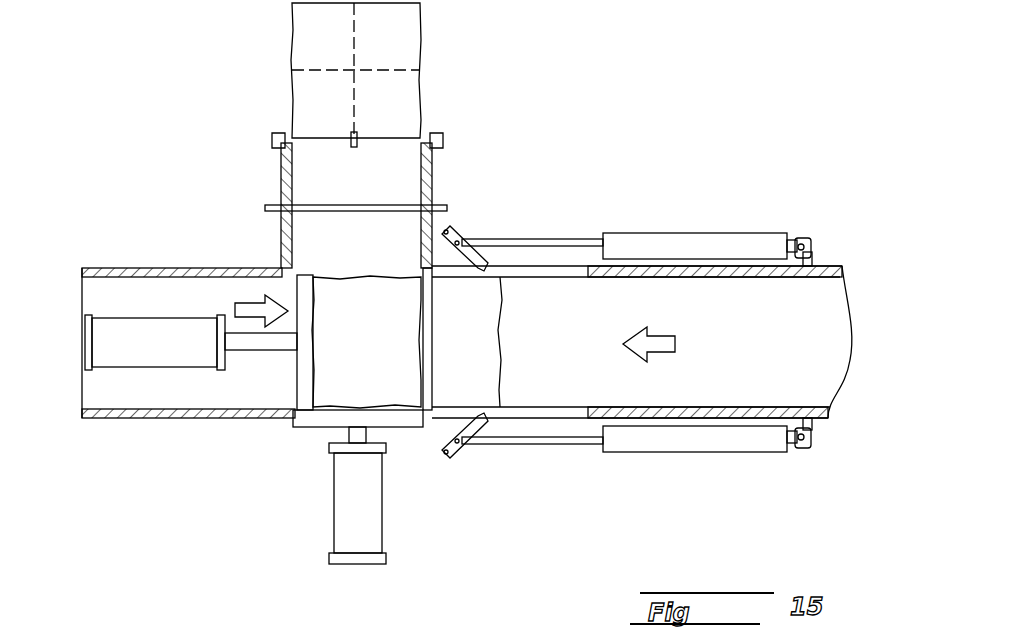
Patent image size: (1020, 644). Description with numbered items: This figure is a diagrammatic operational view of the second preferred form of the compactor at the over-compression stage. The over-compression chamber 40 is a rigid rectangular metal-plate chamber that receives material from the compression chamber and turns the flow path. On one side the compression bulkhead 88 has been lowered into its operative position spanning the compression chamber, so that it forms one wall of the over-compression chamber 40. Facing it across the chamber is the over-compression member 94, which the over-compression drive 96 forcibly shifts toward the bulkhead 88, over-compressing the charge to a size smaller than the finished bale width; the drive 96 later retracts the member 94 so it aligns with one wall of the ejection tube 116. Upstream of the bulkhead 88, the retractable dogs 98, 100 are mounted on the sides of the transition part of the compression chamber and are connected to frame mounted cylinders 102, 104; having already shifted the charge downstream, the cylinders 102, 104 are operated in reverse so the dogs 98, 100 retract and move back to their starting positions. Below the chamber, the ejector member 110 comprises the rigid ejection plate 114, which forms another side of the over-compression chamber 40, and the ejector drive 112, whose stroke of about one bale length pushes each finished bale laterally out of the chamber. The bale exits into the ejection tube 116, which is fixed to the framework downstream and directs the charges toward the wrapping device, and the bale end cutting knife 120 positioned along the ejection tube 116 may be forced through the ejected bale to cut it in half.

The over-compression chamber 40 is at (381, 372).
The compression bulkhead 88 is at (435, 385).
The over-compression member 94 is at (307, 340).
The over-compression drive 96 is at (197, 362).
The retractable dog 98 is at (452, 232).
The retractable dog 100 is at (458, 448).
The frame mounted cylinder 102 is at (662, 232).
The frame mounted cylinder 104 is at (687, 443).
The ejector member 110 is at (310, 457).
The ejector drive 112 is at (383, 527).
The ejection plate 114 is at (295, 427).
The ejection tube 116 is at (278, 168).
The bale end cutting knife 120 is at (265, 207).